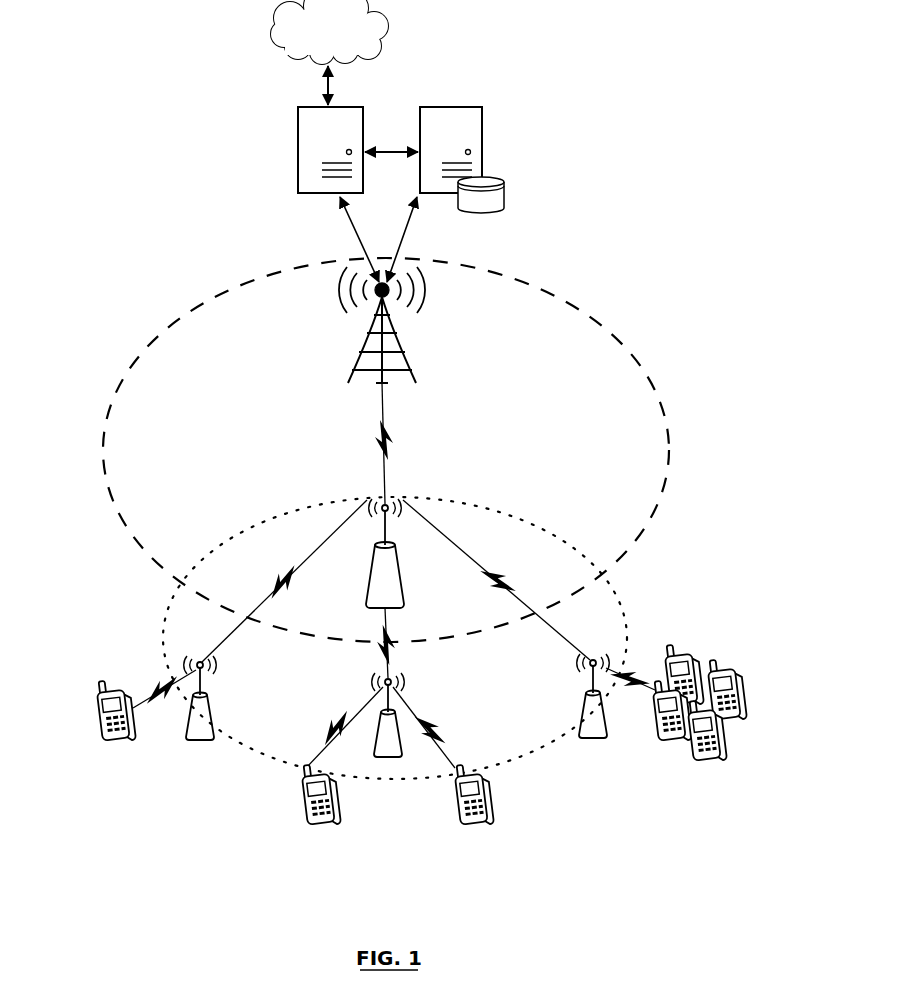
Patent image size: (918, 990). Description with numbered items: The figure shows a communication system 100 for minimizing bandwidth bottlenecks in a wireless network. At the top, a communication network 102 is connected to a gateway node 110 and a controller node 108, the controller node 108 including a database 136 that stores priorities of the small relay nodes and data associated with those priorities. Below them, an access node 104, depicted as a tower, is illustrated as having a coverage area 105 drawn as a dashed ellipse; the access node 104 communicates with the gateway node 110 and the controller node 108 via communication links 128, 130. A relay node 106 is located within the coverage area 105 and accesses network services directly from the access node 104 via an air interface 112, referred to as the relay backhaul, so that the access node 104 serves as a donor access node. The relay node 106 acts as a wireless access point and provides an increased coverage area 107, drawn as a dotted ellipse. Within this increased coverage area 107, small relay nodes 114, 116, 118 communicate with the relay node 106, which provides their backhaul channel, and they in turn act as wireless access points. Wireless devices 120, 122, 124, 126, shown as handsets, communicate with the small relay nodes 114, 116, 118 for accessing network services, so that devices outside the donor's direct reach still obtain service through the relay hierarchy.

The communication system 100 is at (427, 45).
The communication network 102 is at (314, 38).
The access node 104 is at (362, 368).
The coverage area 105 is at (598, 314).
The relay node 106 is at (399, 558).
The increased coverage area 107 is at (507, 511).
The controller node 108 is at (482, 122).
The gateway node 110 is at (298, 128).
The air interface 112 is at (376, 438).
The small relay node 114 is at (201, 741).
The small relay node 116 is at (387, 758).
The small relay node 118 is at (591, 739).
The wireless device 120 is at (97, 712).
The wireless device 122 is at (303, 832).
The wireless device 124 is at (456, 832).
The wireless devices 126 is at (700, 657).
The communication link 128 is at (351, 226).
The communication link 130 is at (408, 226).
The database 136 is at (500, 181).